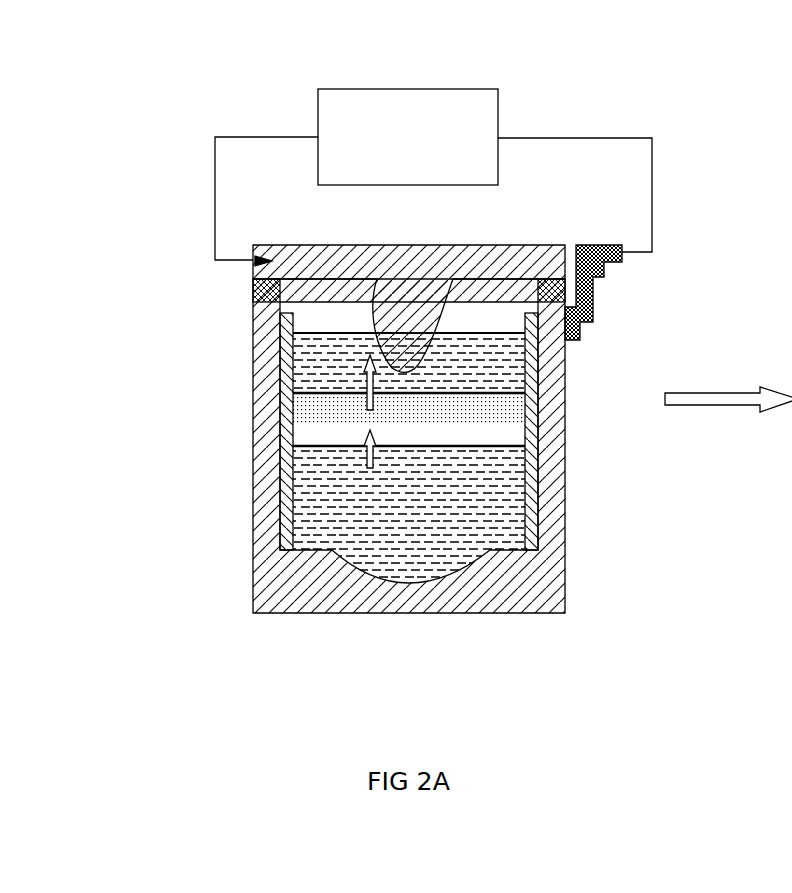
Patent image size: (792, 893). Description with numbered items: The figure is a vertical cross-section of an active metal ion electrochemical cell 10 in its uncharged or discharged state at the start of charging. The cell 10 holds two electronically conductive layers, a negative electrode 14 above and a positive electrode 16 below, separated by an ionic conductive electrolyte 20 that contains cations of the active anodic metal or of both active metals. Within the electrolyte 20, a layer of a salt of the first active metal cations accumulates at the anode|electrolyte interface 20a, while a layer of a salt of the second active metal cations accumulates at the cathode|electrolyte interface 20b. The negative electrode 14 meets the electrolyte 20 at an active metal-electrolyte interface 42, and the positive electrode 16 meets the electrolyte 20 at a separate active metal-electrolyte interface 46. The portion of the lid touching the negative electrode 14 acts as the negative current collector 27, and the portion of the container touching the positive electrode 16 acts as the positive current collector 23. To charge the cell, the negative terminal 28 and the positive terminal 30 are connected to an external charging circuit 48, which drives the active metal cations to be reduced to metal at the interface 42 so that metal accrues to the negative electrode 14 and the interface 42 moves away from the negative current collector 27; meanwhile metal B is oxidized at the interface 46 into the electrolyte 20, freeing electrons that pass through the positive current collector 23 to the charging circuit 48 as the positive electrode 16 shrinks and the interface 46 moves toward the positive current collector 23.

The electrochemical cell 10 is at (316, 226).
The negative electrode 14 is at (310, 360).
The positive electrode 16 is at (315, 510).
The electrolyte 20 is at (314, 418).
The anode|electrolyte interface 20a is at (322, 407).
The cathode|electrolyte interface 20b is at (351, 437).
The positive current collector 23 is at (408, 586).
The negative current collector 27 is at (412, 348).
The negative terminal 28 is at (253, 250).
The positive terminal 30 is at (598, 245).
The active metal-electrolyte interface 42 is at (503, 397).
The active metal-electrolyte interface 46 is at (505, 447).
The external charging circuit 48 is at (413, 89).